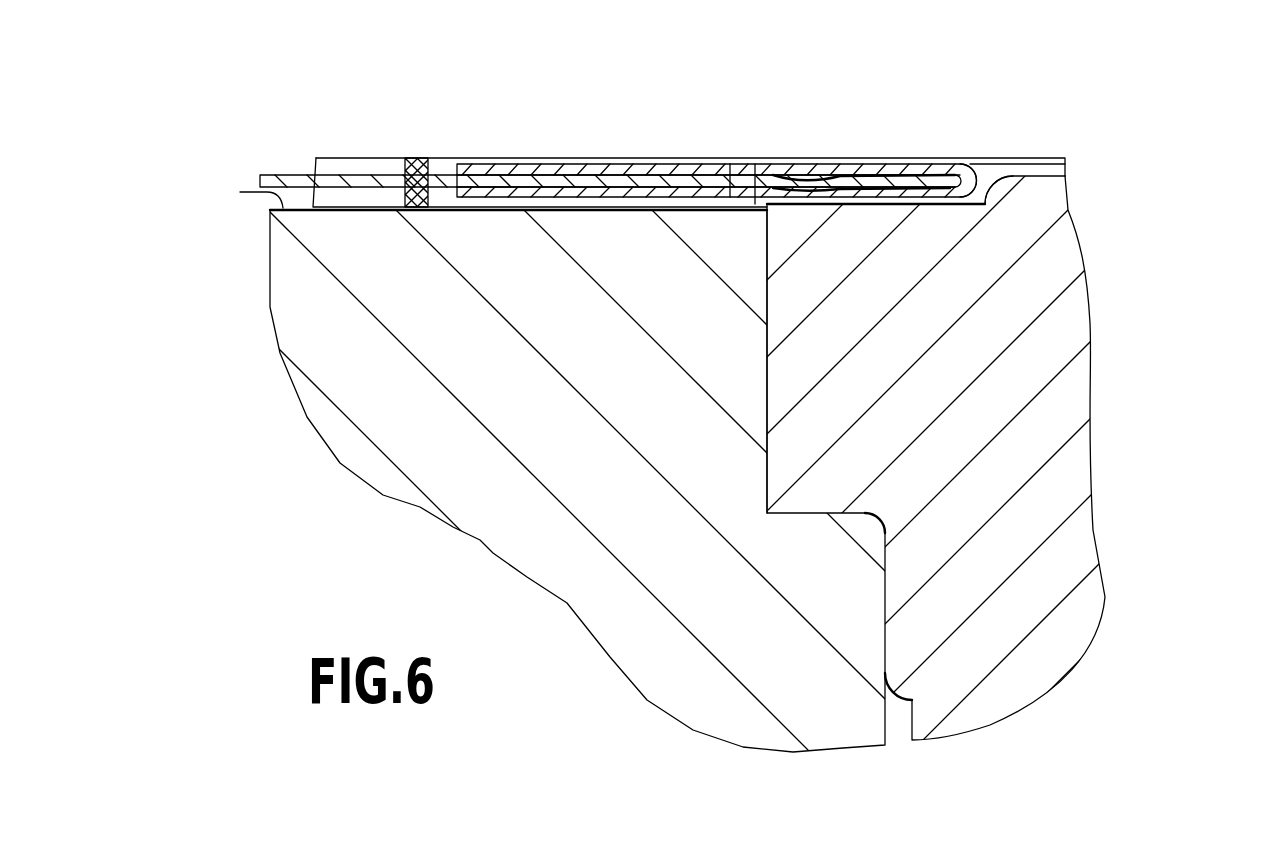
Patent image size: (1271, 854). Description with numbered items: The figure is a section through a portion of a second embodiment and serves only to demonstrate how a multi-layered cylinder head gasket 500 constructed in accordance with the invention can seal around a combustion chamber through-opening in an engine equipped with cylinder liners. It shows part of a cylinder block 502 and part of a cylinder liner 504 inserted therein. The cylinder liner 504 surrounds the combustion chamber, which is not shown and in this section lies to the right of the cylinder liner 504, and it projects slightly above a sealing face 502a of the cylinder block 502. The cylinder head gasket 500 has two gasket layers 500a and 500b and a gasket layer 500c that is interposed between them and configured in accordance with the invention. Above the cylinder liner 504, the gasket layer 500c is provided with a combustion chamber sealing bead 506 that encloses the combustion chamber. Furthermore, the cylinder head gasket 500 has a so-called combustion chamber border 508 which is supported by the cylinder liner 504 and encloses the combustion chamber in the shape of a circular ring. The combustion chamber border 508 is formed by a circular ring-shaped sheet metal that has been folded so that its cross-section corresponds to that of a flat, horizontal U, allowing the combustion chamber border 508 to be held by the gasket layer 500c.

The cylinder head gasket 500 is at (704, 151).
The gasket layer 500a is at (505, 197).
The gasket layer 500b is at (507, 167).
The gasket layer 500c is at (575, 180).
The cylinder block 502 is at (321, 474).
The sealing face 502a is at (240, 192).
The cylinder liner 504 is at (1032, 355).
The combustion chamber sealing bead 506 is at (833, 167).
The combustion chamber border 508 is at (997, 168).